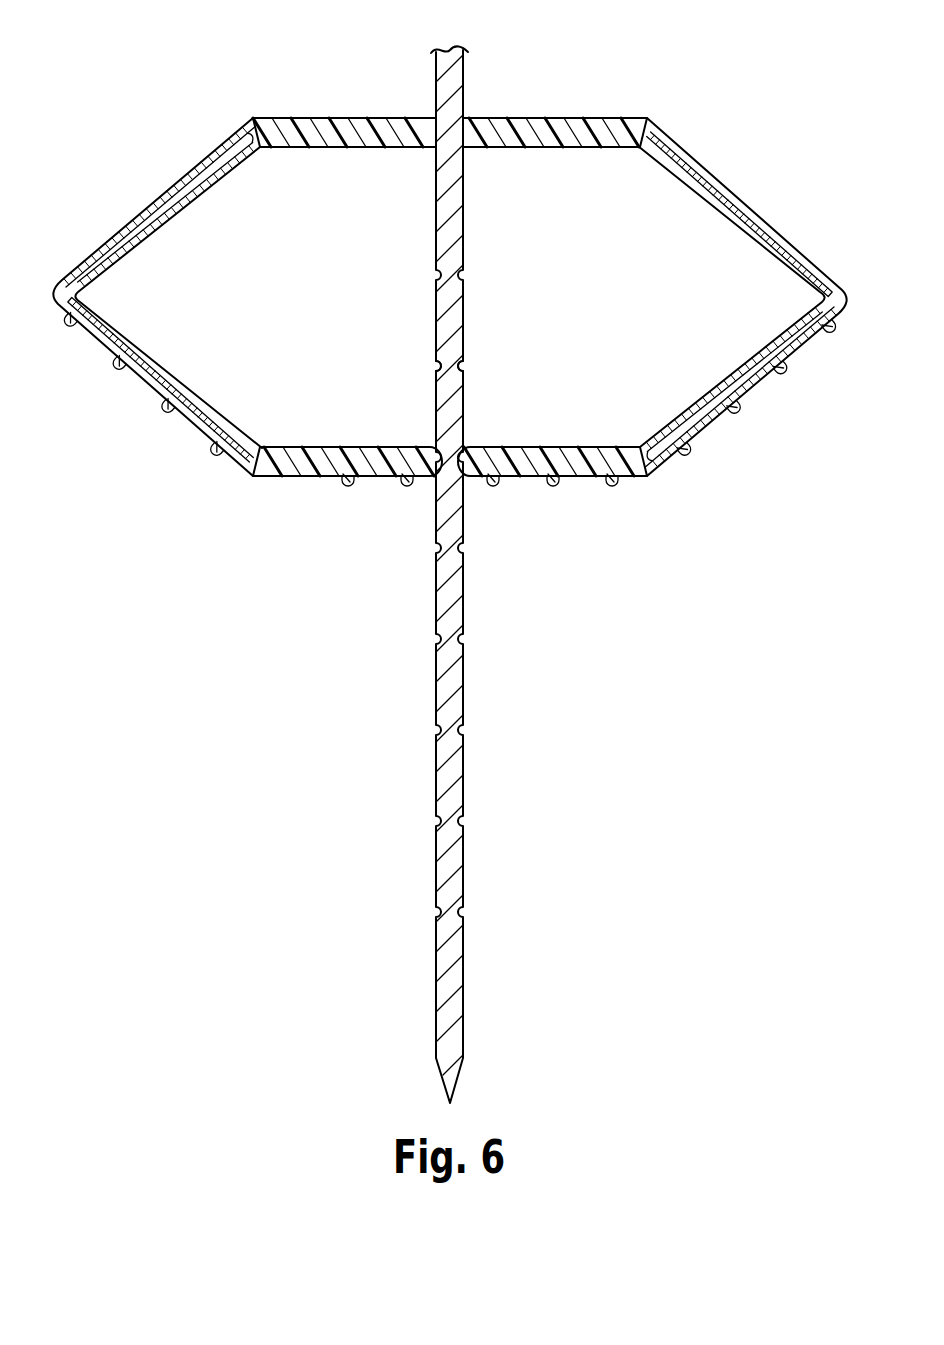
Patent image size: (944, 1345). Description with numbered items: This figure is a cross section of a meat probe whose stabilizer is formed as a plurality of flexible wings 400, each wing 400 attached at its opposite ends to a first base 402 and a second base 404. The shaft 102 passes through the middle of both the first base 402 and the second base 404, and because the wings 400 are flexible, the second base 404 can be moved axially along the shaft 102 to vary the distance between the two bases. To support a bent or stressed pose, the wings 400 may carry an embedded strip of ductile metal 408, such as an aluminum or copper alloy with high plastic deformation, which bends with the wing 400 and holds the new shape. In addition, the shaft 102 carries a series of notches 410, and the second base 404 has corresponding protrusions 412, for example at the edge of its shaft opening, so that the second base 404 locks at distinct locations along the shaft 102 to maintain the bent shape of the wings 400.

The shaft 102 is at (457, 1000).
The wing 400 is at (112, 232).
The first base 402 is at (600, 133).
The second base 404 is at (638, 462).
The strip of ductile metal 408 is at (140, 376).
The notch 410 is at (465, 370).
The protrusion 412 is at (388, 468).